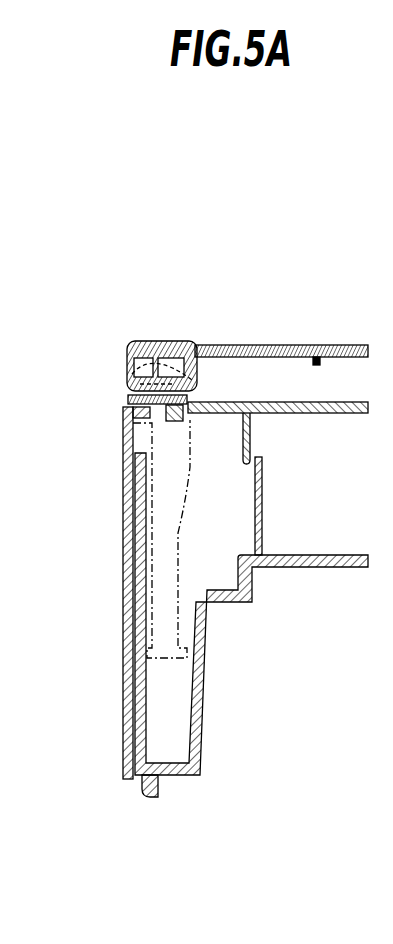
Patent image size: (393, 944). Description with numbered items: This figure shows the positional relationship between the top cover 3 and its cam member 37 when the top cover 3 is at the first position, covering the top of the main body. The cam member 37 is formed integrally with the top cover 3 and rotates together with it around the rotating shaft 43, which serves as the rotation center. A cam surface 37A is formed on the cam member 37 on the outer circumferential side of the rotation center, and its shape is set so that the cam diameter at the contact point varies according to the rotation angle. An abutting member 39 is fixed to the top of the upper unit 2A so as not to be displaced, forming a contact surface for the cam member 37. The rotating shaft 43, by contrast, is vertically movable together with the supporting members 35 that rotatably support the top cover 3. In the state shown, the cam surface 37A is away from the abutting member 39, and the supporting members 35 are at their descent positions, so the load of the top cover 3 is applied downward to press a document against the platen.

The top cover 3 is at (295, 345).
The cam member 37 is at (128, 343).
The cam surface 37A is at (127, 390).
The abutting member 39 is at (127, 404).
The rotating shaft 43 is at (199, 402).
The supporting member 35 is at (181, 483).
The upper unit 2A is at (123, 655).